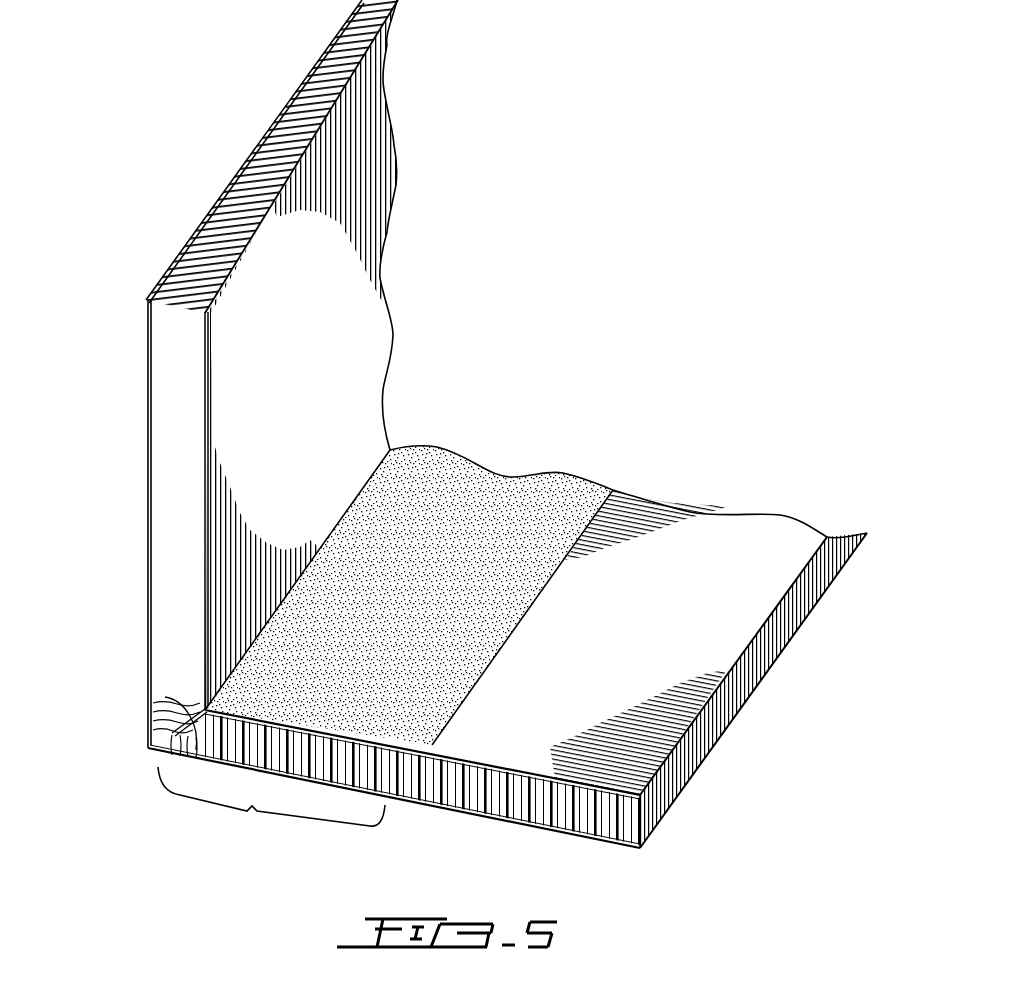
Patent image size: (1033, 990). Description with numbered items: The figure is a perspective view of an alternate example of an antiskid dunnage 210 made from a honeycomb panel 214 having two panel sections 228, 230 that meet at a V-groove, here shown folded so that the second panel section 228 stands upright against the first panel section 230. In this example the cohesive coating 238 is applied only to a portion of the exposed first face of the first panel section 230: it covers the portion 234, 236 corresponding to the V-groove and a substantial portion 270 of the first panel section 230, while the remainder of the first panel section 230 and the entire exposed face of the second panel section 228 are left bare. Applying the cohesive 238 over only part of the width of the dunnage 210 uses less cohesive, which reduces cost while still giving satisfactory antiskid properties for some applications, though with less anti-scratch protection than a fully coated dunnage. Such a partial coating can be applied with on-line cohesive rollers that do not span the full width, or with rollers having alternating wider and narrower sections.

The antiskid dunnage 210 is at (103, 728).
The honeycomb panel 214 is at (742, 693).
The second panel section 228 is at (284, 438).
The first panel section 230 is at (655, 637).
The V-groove portion 234 is at (178, 708).
The V-groove portion 236 is at (170, 757).
The cohesive coating 238 is at (393, 637).
The substantial portion of the first panel section 270 is at (271, 806).